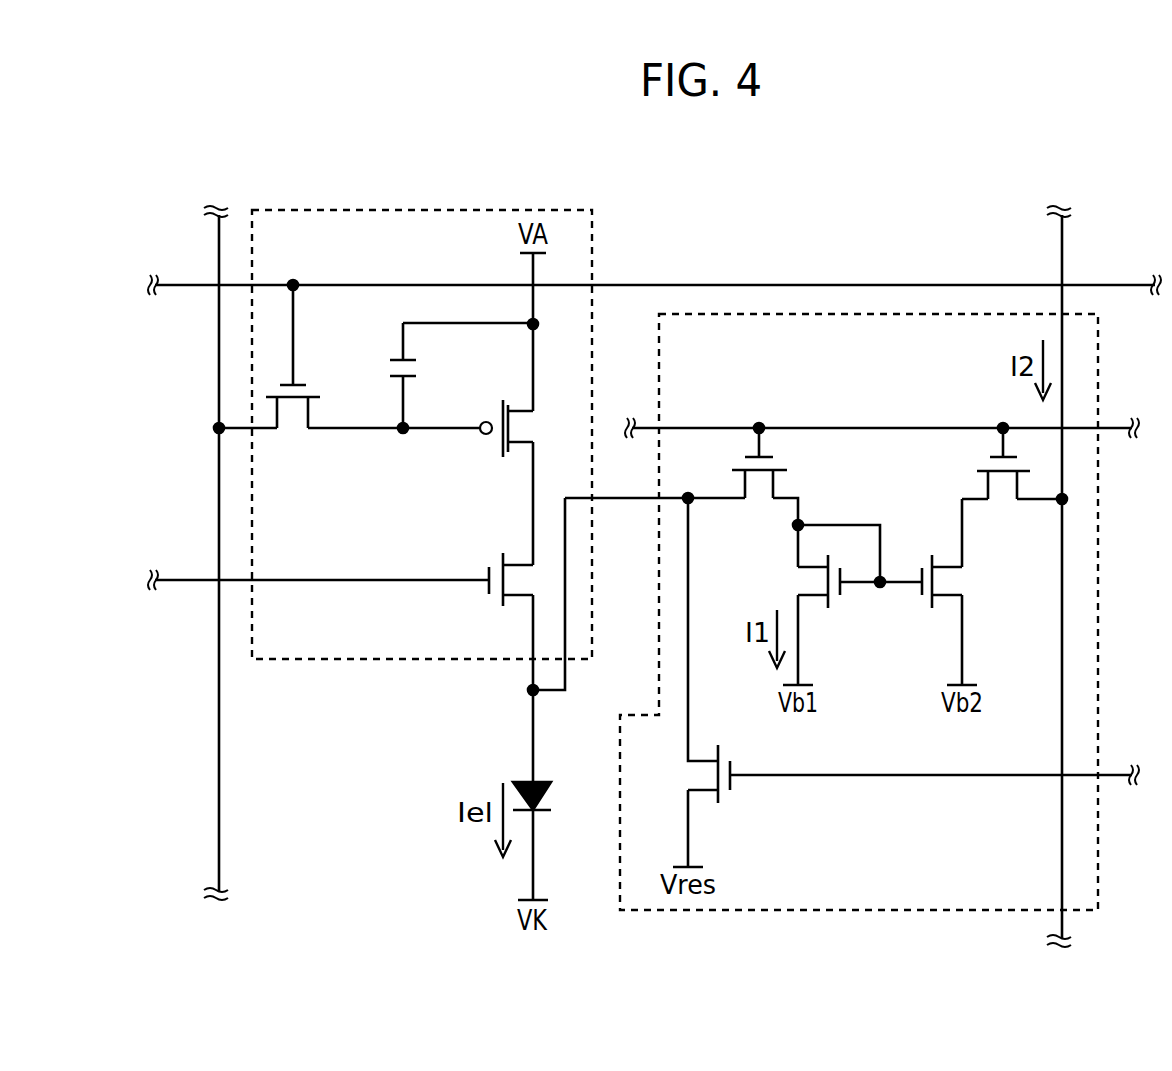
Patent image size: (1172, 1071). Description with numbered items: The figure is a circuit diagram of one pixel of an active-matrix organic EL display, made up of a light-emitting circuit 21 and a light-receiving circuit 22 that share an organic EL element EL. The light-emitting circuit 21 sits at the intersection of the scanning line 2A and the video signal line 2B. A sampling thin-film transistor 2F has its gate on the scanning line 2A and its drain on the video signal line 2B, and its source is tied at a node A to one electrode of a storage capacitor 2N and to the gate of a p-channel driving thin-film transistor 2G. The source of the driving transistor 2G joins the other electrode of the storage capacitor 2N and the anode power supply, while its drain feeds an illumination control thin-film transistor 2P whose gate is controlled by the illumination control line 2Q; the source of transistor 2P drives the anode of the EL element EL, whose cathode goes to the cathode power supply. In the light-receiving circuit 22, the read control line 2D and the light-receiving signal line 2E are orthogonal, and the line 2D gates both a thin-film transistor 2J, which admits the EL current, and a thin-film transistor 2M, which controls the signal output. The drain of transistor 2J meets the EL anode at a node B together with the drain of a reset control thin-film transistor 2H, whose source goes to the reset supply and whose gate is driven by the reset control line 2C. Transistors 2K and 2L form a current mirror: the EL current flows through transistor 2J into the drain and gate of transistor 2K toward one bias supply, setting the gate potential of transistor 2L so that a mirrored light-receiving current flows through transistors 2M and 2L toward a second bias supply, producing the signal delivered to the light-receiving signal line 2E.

The light-emitting circuit 21 is at (343, 210).
The light-receiving circuit 22 is at (1099, 870).
The scanning line 2A is at (797, 284).
The video signal line 2B is at (220, 722).
The reset control line 2C is at (835, 779).
The light-receiving control line 2D is at (827, 426).
The light-receiving signal line 2E is at (1063, 368).
The sampling thin-film transistor 2F is at (293, 432).
The driving thin-film transistor 2G is at (530, 428).
The reset control thin-film transistor 2H is at (723, 805).
The thin-film transistor for controlling current input 2J is at (780, 465).
The thin-film transistor of current mirror 2K is at (836, 603).
The thin-film transistor of current mirror 2L is at (924, 566).
The thin-film transistor for controlling light-receiving signal output 2M is at (1003, 505).
The storage capacitor 2N is at (390, 372).
The illumination control thin-film transistor 2P is at (497, 601).
The illumination control line 2Q is at (313, 578).
The node A is at (403, 436).
The node B is at (690, 503).
The organic EL element EL is at (551, 797).